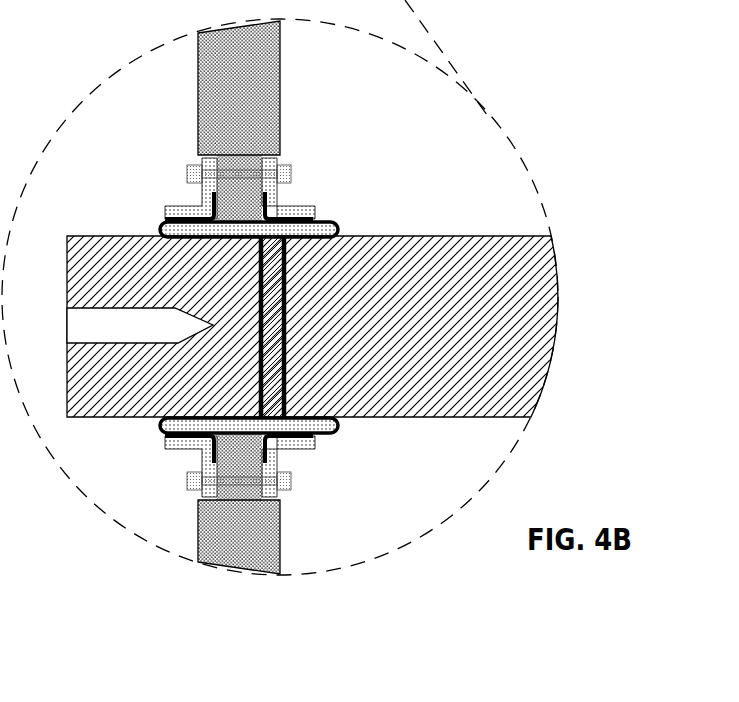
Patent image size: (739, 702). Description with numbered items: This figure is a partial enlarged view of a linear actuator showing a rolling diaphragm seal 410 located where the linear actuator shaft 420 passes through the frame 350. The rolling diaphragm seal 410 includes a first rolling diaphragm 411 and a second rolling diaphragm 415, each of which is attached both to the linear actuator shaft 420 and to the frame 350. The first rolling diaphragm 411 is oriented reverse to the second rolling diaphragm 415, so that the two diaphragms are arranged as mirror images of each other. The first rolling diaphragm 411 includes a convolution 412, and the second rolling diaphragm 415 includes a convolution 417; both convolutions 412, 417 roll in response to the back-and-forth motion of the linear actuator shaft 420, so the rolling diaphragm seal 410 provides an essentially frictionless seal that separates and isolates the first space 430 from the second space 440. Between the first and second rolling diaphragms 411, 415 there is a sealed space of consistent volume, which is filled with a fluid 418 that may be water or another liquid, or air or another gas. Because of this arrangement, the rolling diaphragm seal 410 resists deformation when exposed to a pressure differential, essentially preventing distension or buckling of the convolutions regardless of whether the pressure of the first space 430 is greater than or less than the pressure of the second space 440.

The frame 350 is at (281, 100).
The rolling diaphragm seal 410 is at (289, 206).
The first rolling diaphragm 411 is at (185, 215).
The convolution 412 is at (161, 229).
The second rolling diaphragm 415 is at (312, 218).
The convolution 417 is at (340, 228).
The fluid 418 is at (248, 230).
The linear actuator shaft 420 is at (388, 419).
The first space 430 is at (475, 136).
The second space 440 is at (101, 160).